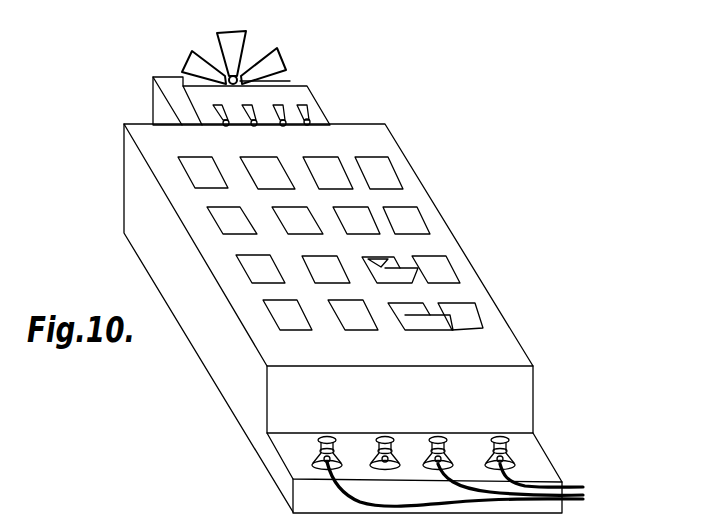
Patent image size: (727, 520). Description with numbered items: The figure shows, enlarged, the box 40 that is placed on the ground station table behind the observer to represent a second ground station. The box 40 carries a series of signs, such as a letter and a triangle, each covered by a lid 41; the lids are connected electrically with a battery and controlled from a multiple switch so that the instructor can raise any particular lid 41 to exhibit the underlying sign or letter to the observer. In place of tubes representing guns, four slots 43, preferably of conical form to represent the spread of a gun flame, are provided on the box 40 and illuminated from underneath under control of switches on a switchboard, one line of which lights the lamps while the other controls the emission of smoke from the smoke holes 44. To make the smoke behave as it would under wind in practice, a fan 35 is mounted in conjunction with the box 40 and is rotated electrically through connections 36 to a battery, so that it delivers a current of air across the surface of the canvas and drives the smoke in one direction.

The fan 35 is at (276, 61).
The connections 36 is at (426, 468).
The box 40 is at (490, 305).
The lid 41 is at (443, 265).
The slot 43 is at (312, 107).
The smoke hole 44 is at (313, 119).